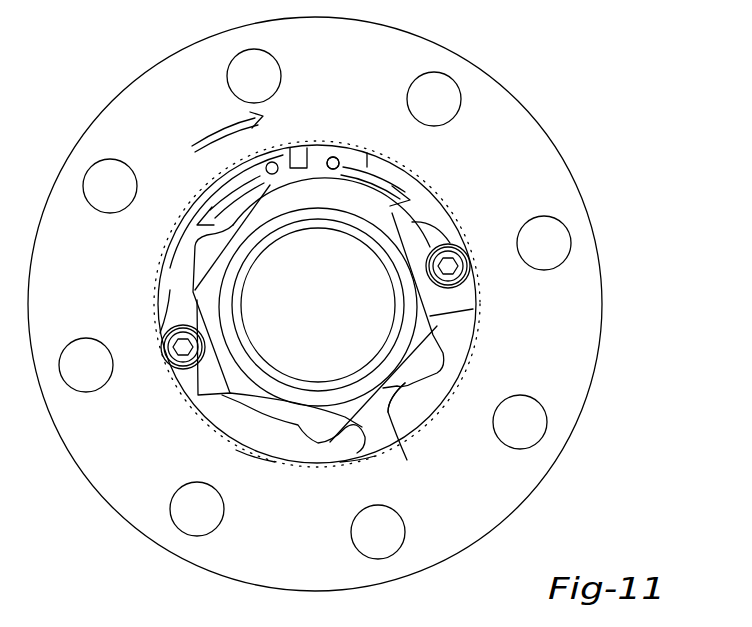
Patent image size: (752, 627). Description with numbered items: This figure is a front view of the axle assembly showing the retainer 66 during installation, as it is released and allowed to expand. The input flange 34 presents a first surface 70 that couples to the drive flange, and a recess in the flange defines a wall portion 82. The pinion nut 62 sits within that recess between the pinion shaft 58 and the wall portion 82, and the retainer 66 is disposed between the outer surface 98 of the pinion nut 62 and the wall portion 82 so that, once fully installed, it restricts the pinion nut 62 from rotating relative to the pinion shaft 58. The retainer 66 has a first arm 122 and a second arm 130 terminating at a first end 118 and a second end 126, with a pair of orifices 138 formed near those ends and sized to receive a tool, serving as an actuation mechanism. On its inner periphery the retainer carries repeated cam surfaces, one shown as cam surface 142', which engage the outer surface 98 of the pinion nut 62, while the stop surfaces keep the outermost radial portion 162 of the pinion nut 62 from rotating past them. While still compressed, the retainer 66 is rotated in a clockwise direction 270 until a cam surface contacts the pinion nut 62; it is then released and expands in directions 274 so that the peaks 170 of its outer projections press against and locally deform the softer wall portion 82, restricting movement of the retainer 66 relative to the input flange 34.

The input flange 34 is at (509, 90).
The pinion shaft 58 is at (325, 320).
The pinion nut 62 is at (242, 393).
The retainer 66 is at (257, 445).
The first surface 70 is at (577, 280).
The wall portion 82 is at (444, 376).
The outer surface 98 is at (357, 453).
The first end 118 is at (284, 152).
The first arm 122 is at (170, 268).
The second end 126 is at (332, 156).
The second arm 130 is at (416, 213).
The orifices 138 is at (333, 170).
The cam surface 142' is at (407, 433).
The outermost radial portion 162 is at (193, 285).
The peaks 170 is at (473, 331).
The clockwise direction 270 is at (222, 127).
The directions 274 is at (217, 197).